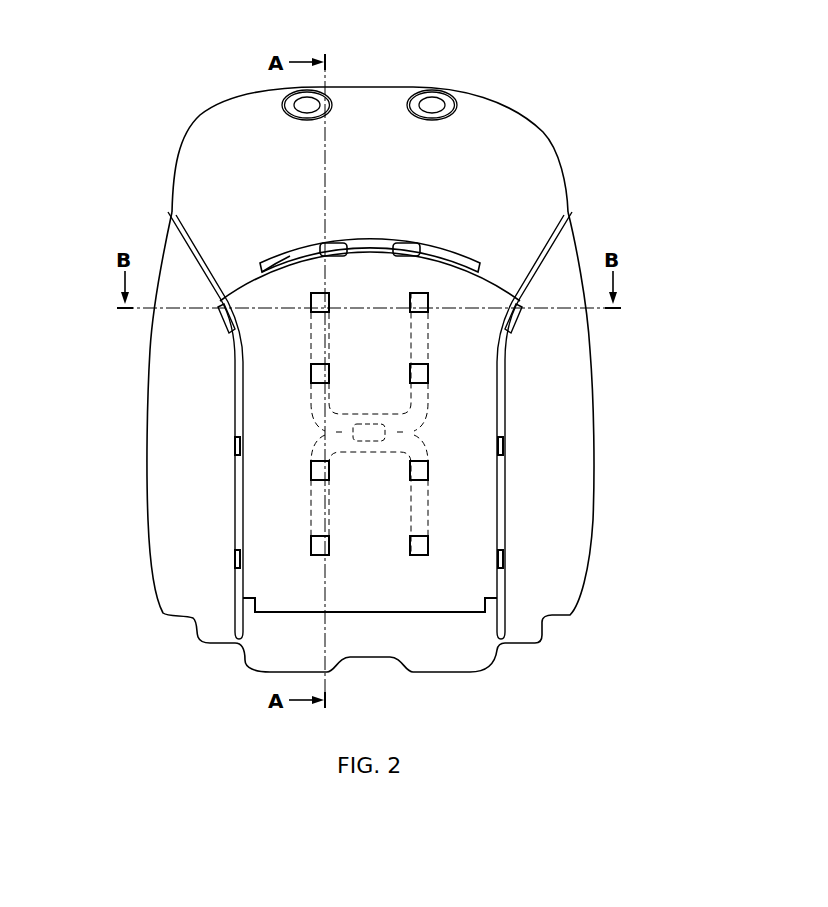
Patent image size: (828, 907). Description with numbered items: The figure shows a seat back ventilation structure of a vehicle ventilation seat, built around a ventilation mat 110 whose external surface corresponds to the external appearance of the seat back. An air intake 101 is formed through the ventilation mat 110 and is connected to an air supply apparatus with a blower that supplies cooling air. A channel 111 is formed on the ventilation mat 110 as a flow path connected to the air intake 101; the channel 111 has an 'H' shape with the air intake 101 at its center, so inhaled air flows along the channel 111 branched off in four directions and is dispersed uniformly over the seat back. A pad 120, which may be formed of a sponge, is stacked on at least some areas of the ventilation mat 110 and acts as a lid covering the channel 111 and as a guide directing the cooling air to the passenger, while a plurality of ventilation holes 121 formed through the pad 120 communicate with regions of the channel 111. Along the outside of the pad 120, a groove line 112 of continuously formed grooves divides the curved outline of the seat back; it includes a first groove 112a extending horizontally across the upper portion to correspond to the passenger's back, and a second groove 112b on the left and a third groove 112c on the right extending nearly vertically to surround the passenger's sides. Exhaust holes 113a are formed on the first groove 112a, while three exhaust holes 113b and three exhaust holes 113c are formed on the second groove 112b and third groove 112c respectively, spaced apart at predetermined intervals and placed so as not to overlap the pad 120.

The air intake 101 is at (325, 428).
The ventilation mat 110 is at (507, 140).
The channel 111 is at (310, 347).
The groove line 112 is at (456, 246).
The first groove 112a is at (287, 257).
The second groove 112b is at (500, 498).
The third groove 112c is at (238, 494).
The exhaust holes of the first group 113a is at (407, 243).
The exhaust holes of the second group 113b is at (520, 330).
The exhaust holes of the third group 113c is at (223, 322).
The pad 120 is at (483, 403).
The ventilation holes 121 is at (322, 373).